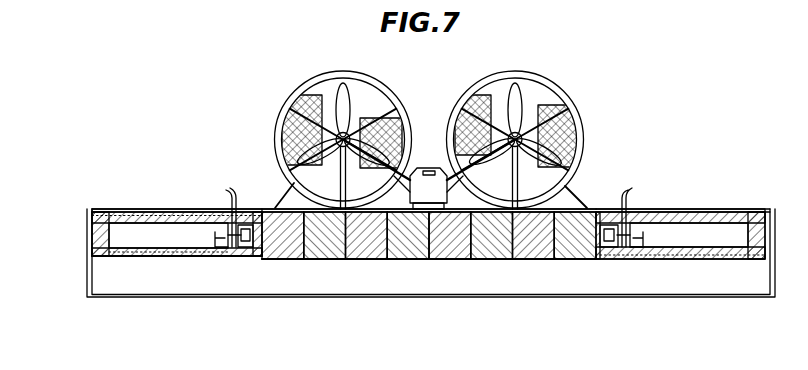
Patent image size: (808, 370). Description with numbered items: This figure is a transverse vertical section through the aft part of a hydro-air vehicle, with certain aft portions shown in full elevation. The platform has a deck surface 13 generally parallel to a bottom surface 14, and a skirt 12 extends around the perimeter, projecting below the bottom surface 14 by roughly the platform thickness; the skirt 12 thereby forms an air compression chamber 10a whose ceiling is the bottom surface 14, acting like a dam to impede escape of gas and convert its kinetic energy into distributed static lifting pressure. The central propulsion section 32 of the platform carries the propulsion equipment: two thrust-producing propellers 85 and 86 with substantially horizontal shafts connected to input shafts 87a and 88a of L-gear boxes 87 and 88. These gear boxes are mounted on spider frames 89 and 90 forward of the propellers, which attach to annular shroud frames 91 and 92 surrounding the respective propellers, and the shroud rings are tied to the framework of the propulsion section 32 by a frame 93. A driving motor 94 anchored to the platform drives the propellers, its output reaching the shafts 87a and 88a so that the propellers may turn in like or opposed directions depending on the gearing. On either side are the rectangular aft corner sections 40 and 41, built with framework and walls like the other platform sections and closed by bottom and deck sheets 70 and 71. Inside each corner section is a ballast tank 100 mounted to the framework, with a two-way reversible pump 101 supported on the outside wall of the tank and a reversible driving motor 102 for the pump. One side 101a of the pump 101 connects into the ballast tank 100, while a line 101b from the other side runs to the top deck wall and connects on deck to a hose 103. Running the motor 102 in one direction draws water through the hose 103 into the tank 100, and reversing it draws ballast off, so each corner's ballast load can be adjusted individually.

The air compression chamber 10a is at (434, 281).
The skirt 12 is at (87, 269).
The deck surface 13 is at (736, 211).
The bottom surface 14 is at (518, 261).
The propulsion section 32 is at (338, 272).
The aft corner section 40 is at (103, 209).
The aft corner section 41 is at (750, 218).
The bottom sheet 70 is at (165, 257).
The deck sheet 71 is at (158, 210).
The thrust-producing propeller 85 is at (518, 93).
The thrust-producing propeller 86 is at (345, 95).
The L-gear box 87 is at (511, 134).
The input shaft 87a is at (505, 160).
The L-gear box 88 is at (333, 150).
The input shaft 88a is at (380, 165).
The spider frame 89 is at (548, 113).
The spider frame 90 is at (312, 98).
The annular shroud frame 91 is at (581, 132).
The annular shroud frame 92 is at (396, 104).
The frame 93 is at (578, 197).
The driving motor 94 is at (420, 167).
The ballast tank 100 is at (140, 222).
The two-way reversible pump 101 is at (237, 250).
The pump side 101a is at (213, 238).
The line 101b is at (227, 205).
The reversible driving motor 102 is at (247, 218).
The hose 103 is at (230, 193).